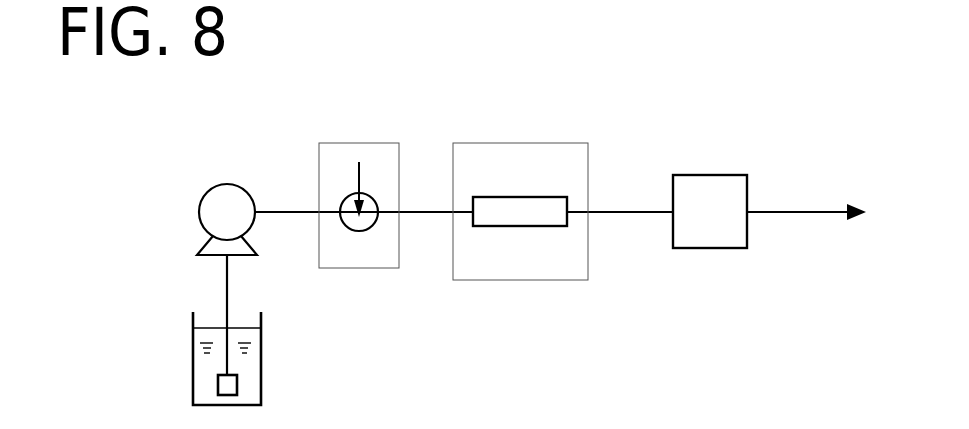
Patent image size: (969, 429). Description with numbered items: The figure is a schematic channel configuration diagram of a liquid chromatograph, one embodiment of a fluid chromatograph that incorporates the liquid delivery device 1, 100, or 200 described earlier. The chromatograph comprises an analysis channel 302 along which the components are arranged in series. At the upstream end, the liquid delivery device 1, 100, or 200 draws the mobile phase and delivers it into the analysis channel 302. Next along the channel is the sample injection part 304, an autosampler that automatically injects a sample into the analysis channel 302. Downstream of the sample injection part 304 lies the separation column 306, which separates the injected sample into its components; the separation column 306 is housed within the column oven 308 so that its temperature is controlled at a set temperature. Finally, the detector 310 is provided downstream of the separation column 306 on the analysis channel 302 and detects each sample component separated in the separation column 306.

The liquid delivery device 1 is at (168, 265).
The liquid delivery device 100 is at (168, 265).
The liquid delivery device 200 is at (215, 185).
The analysis channel 302 is at (287, 210).
The sample injection part 304 is at (378, 143).
The separation column 306 is at (514, 197).
The column oven 308 is at (557, 143).
The detector 310 is at (710, 175).